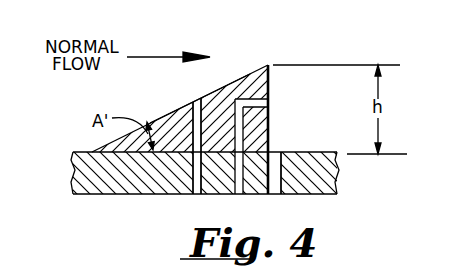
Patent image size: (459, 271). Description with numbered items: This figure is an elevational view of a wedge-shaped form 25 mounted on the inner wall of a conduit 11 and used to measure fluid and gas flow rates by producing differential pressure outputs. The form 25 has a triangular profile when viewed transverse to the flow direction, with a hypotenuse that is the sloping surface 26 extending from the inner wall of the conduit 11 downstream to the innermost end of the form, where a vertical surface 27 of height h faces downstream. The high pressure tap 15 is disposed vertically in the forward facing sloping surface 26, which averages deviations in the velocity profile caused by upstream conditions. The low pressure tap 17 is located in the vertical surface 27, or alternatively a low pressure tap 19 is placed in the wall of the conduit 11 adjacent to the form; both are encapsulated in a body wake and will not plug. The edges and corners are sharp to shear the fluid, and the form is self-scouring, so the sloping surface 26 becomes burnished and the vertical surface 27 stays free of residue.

The conduit 11 is at (145, 178).
The high pressure tap 15 is at (194, 100).
The low pressure tap 17 is at (272, 101).
The low pressure tap 19 is at (280, 152).
The form 25 is at (262, 68).
The sloping surface 26 is at (247, 72).
The vertical surface 27 is at (272, 75).